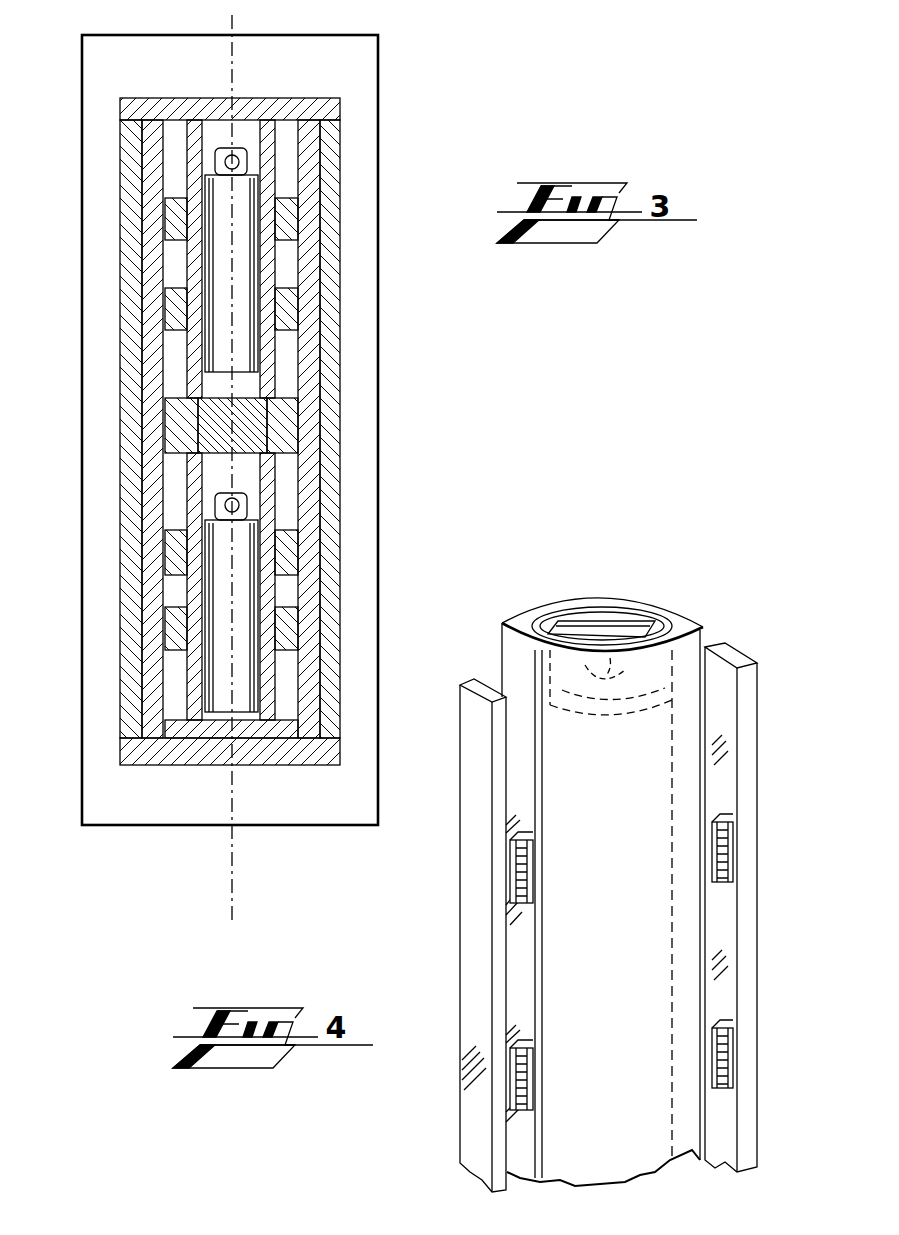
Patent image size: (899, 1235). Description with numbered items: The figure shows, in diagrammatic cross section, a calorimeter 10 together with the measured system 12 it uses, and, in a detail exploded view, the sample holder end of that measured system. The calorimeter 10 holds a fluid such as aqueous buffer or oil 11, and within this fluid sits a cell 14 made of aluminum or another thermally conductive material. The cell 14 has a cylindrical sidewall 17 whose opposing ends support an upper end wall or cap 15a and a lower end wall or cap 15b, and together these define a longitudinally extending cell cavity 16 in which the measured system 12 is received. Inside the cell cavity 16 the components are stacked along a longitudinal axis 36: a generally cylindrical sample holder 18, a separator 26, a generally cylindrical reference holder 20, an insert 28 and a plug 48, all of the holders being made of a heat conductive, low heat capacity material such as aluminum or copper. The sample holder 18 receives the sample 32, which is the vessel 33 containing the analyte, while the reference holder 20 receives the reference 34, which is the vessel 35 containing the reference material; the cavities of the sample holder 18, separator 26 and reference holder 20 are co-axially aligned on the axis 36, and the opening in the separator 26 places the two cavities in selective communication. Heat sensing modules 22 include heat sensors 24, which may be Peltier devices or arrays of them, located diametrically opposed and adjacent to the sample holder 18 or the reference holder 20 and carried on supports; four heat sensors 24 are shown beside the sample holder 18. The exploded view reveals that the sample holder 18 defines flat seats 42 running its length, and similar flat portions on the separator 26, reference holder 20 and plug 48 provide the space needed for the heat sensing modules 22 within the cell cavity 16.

In FIG. 3, the calorimeter 10 is at (385, 94).
In FIG. 3, the aqueous buffer or oil 11 is at (97, 760).
In FIG. 3, the measured system 12 is at (322, 768).
In FIG. 3, the cell 14 is at (129, 468).
In FIG. 3, the upper end wall or cap 15a is at (270, 97).
In FIG. 3, the lower end wall or cap 15b is at (160, 767).
In FIG. 3, the cell cavity 16 is at (167, 353).
In FIG. 3, the cylindrical sidewall 17 is at (343, 468).
In FIG. 3, the sample holder 18 is at (278, 172).
In FIG. 4, the sample holder 18 is at (583, 600).
In FIG. 3, the reference holder 20 is at (284, 682).
In FIG. 3, the heat sensing module 22 is at (138, 158).
In FIG. 4, the heat sensing module 22 is at (752, 727).
In FIG. 3, the heat sensor 24 is at (165, 205).
In FIG. 4, the heat sensor 24 is at (512, 862).
In FIG. 3, the separator 26 is at (173, 440).
In FIG. 3, the insert 28 is at (253, 428).
In FIG. 3, the sample 32 is at (233, 277).
In FIG. 4, the sample 32 is at (578, 943).
In FIG. 3, the vessel 33 is at (222, 203).
In FIG. 3, the reference 34 is at (244, 578).
In FIG. 3, the vessel 35 is at (220, 690).
In FIG. 3, the longitudinal axis 36 is at (228, 880).
In FIG. 4, the seat 42 is at (520, 652).
In FIG. 3, the plug 48 is at (257, 740).